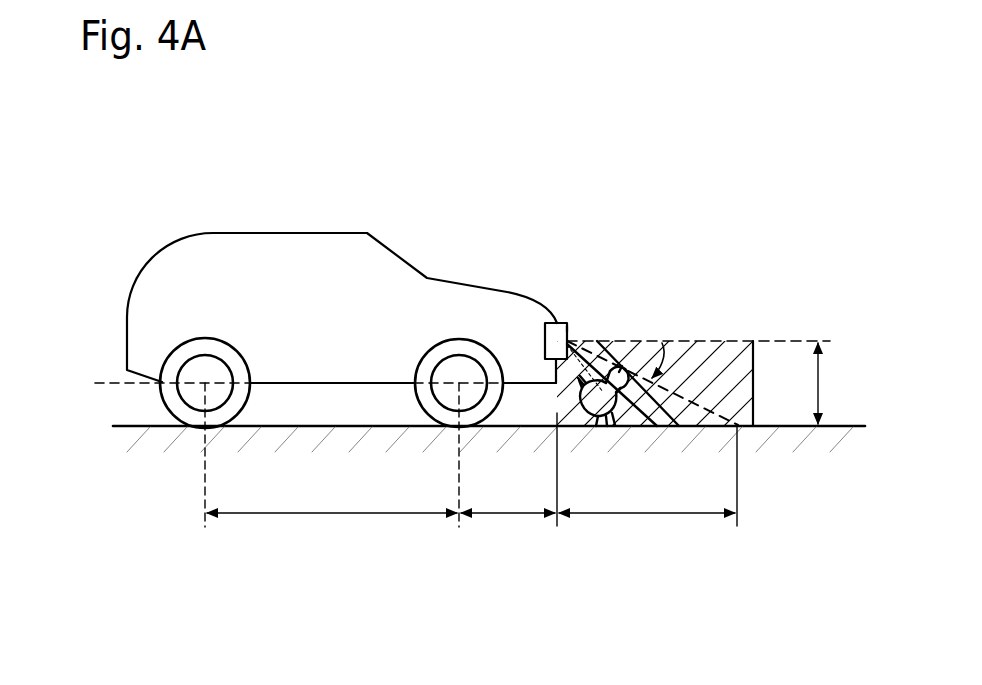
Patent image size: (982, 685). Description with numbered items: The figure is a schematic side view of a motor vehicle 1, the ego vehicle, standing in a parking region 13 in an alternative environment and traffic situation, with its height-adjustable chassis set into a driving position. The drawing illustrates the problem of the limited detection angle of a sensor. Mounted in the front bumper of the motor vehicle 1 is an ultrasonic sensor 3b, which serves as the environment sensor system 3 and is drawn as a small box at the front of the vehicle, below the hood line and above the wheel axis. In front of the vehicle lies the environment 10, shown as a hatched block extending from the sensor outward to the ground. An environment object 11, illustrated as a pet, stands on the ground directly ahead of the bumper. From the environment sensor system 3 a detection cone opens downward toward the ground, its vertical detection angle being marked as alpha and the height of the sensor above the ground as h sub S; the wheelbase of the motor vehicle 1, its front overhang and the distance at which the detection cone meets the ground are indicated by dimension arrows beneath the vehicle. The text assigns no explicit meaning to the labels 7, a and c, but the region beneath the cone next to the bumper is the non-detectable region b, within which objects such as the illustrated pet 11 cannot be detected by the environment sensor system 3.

The motor vehicle 1 is at (475, 335).
The vehicle body 7 is at (213, 272).
The environment sensor system 3 is at (552, 290).
The ultrasonic sensor 3b is at (567, 328).
The environment 10 is at (664, 307).
The environment object 11 is at (622, 418).
The parking region 13 is at (193, 432).
The detection beam a is at (687, 370).
The non-detectable region b is at (660, 418).
The beam axis c is at (723, 407).